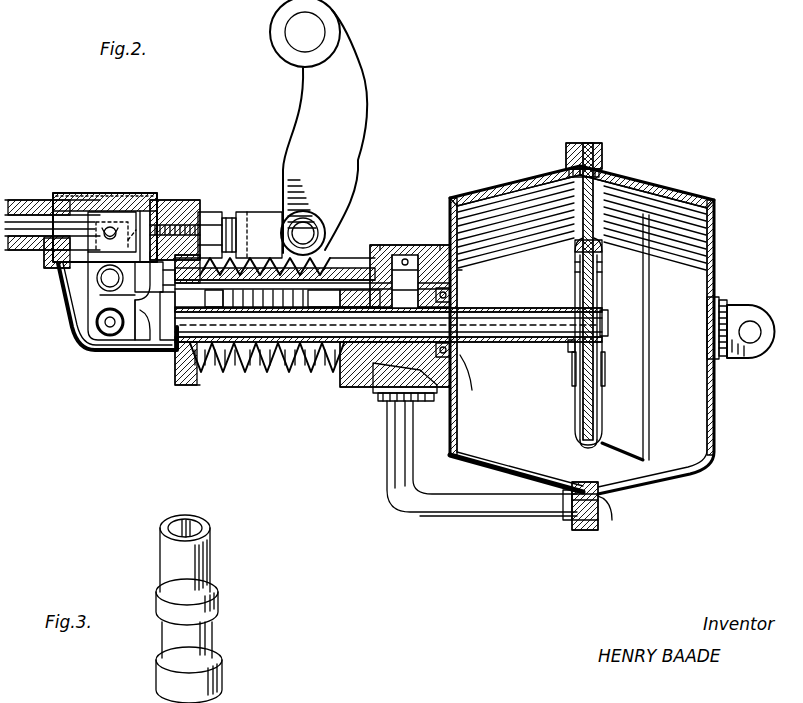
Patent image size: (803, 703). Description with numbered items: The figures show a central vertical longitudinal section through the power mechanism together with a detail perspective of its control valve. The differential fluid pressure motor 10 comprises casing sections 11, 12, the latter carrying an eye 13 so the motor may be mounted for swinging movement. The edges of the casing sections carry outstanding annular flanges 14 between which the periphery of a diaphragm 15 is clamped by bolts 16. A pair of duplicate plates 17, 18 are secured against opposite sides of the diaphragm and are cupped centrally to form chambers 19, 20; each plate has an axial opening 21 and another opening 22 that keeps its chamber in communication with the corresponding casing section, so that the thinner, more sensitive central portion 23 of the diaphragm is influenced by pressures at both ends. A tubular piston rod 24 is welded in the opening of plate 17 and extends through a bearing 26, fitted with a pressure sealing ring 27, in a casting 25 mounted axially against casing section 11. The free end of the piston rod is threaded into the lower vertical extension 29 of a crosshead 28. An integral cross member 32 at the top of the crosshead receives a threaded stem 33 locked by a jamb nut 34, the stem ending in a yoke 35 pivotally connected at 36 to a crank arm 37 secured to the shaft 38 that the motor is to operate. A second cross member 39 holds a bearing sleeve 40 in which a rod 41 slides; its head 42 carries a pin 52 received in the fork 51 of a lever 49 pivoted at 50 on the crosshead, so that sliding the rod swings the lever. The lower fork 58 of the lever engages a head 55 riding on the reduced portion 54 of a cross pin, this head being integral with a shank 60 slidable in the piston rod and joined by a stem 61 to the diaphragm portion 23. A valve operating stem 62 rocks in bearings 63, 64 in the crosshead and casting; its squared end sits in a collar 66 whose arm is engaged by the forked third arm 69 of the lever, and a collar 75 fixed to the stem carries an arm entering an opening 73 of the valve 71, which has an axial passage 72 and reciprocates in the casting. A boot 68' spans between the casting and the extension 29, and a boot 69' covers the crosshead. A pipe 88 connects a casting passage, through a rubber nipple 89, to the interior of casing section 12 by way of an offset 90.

In FIG. 2, the differential fluid pressure motor 10 is at (630, 180).
In FIG. 2, the casing section 11 is at (521, 184).
In FIG. 2, the casing section 12 is at (695, 200).
In FIG. 2, the eye 13 is at (750, 307).
In FIG. 2, the annular flanges 14 is at (594, 145).
In FIG. 2, the diaphragm 15 is at (650, 322).
In FIG. 2, the bolts 16 is at (567, 158).
In FIG. 2, the plate 17 is at (573, 274).
In FIG. 2, the plate 18 is at (604, 270).
In FIG. 2, the chamber 19 is at (578, 293).
In FIG. 2, the chamber 20 is at (604, 288).
In FIG. 2, the axial opening 21 is at (572, 348).
In FIG. 2, the opening 22 is at (605, 364).
In FIG. 2, the central portion of diaphragm 23 is at (580, 396).
In FIG. 2, the tubular piston rod 24 is at (480, 310).
In FIG. 2, the casting 25 is at (464, 268).
In FIG. 2, the bearing 26 is at (405, 378).
In FIG. 2, the pressure sealing ring 27 is at (478, 377).
In FIG. 2, the crosshead 28 is at (34, 194).
In FIG. 2, the lower vertical extension 29 is at (166, 342).
In FIG. 2, the cross member 32 is at (188, 200).
In FIG. 2, the stem 33 is at (233, 216).
In FIG. 2, the jamb nut 34 is at (212, 210).
In FIG. 2, the yoke 35 is at (258, 212).
In FIG. 2, the pivotal connection 36 is at (305, 230).
In FIG. 2, the crank arm 37 is at (340, 147).
In FIG. 2, the shaft 38 is at (316, 29).
In FIG. 2, the second cross member 39 is at (67, 193).
In FIG. 2, the bearing sleeve 40 is at (82, 208).
In FIG. 2, the rod 41 is at (48, 252).
In FIG. 2, the head 42 is at (132, 228).
In FIG. 2, the lever 49 is at (104, 298).
In FIG. 2, the pivot 50 is at (98, 281).
In FIG. 2, the fork 51 is at (136, 230).
In FIG. 2, the pin 52 is at (110, 227).
In FIG. 2, the reduced portion of pin 54 is at (102, 330).
In FIG. 2, the head 55 is at (109, 328).
In FIG. 2, the fork 58 is at (92, 334).
In FIG. 2, the shank 60 is at (186, 345).
In FIG. 2, the stem 61 is at (287, 348).
In FIG. 2, the valve operating stem 62 is at (325, 262).
In FIG. 2, the bearing 63 is at (312, 295).
In FIG. 2, the bearing 64 is at (350, 298).
In FIG. 2, the collar 66 is at (158, 300).
In FIG. 2, the boot 68' is at (382, 369).
In FIG. 2, the third arm 69 is at (129, 346).
In FIG. 2, the boot 69' is at (99, 306).
In FIG. 3, the valve 71 is at (174, 517).
In FIG. 3, the axial passage 72 is at (197, 524).
In FIG. 3, the opening 73 is at (212, 560).
In FIG. 2, the collar 75 is at (406, 268).
In FIG. 2, the pipe 88 is at (440, 494).
In FIG. 2, the rubber nipple 89 is at (384, 402).
In FIG. 2, the offset 90 is at (602, 516).